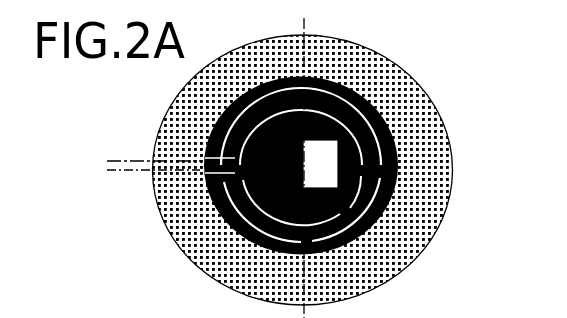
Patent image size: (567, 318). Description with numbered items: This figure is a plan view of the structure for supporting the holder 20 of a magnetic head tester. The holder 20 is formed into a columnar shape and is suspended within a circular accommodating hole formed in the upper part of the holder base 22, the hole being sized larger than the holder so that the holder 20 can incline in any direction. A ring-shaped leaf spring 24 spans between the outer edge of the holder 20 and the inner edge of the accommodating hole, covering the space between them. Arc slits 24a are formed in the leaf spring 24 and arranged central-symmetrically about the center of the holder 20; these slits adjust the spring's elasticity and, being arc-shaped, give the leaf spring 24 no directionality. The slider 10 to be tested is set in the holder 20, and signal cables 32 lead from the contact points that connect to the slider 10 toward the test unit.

The slider 10 is at (228, 230).
The holder 20 is at (355, 247).
The holder base 22 is at (423, 218).
The leaf spring 24 is at (400, 158).
The arc slits 24a is at (368, 98).
The signal cables 32 is at (117, 152).